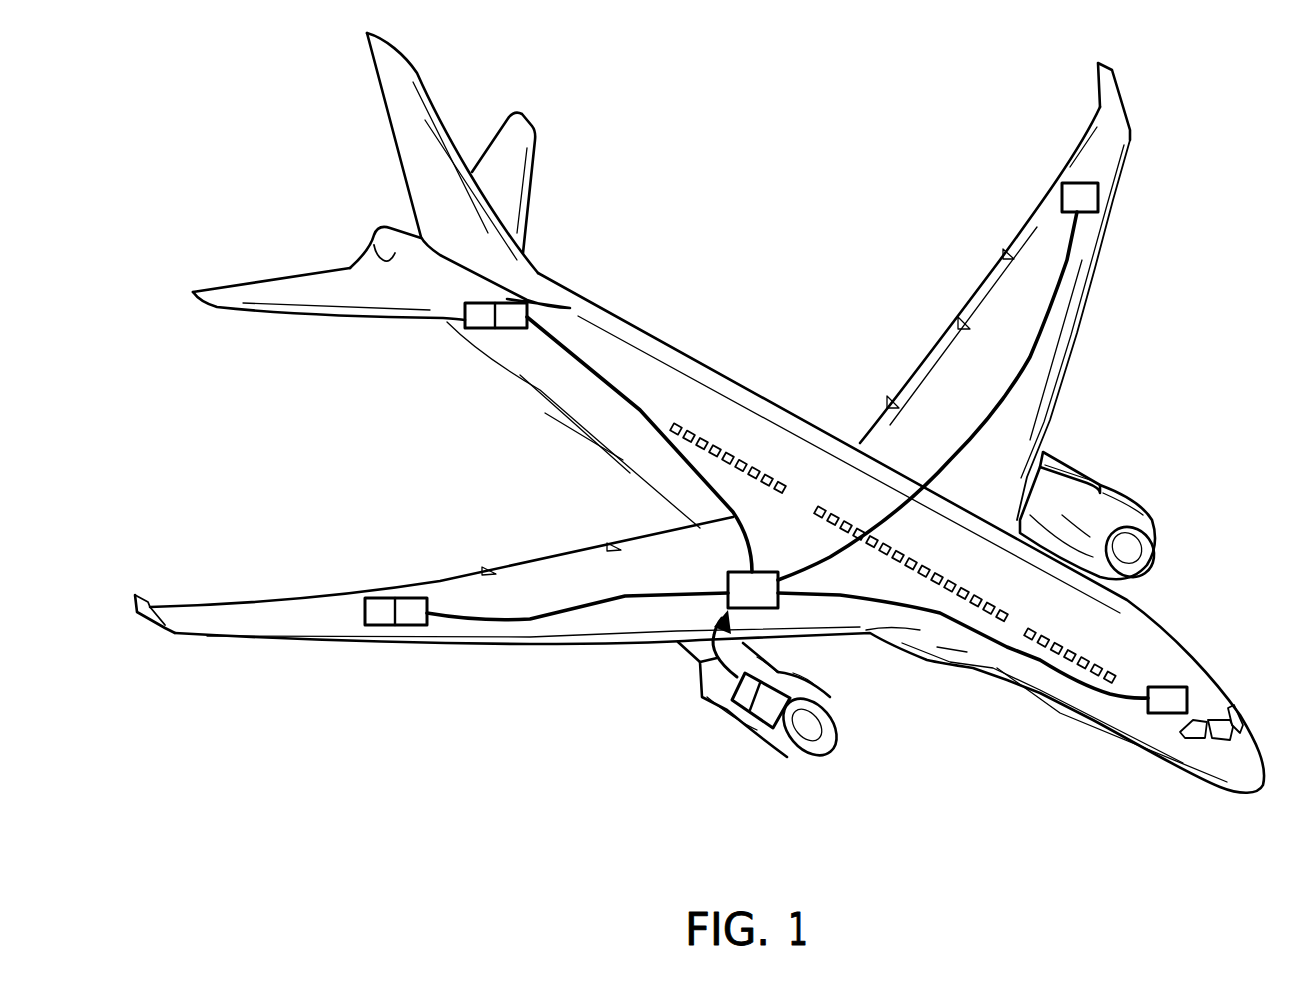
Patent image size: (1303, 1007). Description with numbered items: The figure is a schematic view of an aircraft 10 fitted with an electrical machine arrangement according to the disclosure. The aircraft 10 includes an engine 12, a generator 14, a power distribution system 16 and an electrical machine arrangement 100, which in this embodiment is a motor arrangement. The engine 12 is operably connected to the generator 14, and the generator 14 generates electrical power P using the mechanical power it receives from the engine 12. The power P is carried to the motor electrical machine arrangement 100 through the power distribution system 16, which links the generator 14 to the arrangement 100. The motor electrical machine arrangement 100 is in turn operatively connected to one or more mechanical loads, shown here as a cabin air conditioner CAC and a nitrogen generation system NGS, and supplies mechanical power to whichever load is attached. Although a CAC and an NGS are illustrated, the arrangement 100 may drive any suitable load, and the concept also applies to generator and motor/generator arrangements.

The aircraft 10 is at (370, 798).
The engine 12 is at (758, 733).
The generator 14 is at (742, 698).
The power distribution system 16 is at (640, 410).
The electrical machine arrangement 100 is at (780, 448).
The cabin air conditioner CAC is at (482, 320).
The nitrogen generation system NGS is at (383, 615).
The electrical power P is at (703, 658).